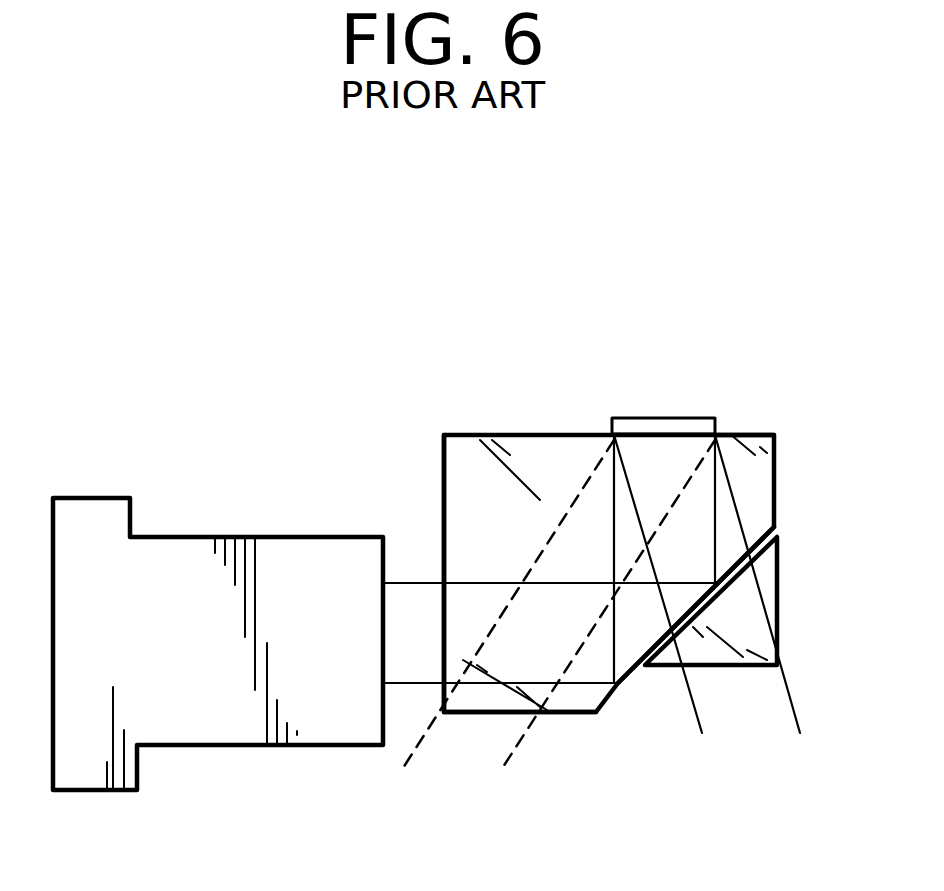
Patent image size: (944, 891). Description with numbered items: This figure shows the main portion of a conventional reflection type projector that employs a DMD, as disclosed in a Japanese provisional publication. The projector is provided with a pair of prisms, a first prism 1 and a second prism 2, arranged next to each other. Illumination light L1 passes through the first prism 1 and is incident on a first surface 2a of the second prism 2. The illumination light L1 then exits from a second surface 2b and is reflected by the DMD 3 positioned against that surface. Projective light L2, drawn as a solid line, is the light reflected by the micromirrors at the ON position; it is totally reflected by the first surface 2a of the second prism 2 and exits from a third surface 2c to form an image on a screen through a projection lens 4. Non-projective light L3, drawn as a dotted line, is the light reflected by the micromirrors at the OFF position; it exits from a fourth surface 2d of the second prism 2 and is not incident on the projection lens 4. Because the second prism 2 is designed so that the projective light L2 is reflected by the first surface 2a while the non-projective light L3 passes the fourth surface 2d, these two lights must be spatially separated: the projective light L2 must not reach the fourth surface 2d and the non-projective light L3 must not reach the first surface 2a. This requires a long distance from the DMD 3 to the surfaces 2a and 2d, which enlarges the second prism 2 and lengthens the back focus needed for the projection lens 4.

The first prism 1 is at (780, 600).
The second prism 2 is at (765, 470).
The first surface 2a is at (637, 672).
The second surface 2b is at (728, 433).
The third surface 2c is at (442, 450).
The fourth surface 2d is at (570, 715).
The DMD 3 is at (652, 418).
The projection lens 4 is at (232, 747).
The illumination light L1 is at (827, 742).
The projective light L2 is at (427, 583).
The non-projective light L3 is at (522, 777).